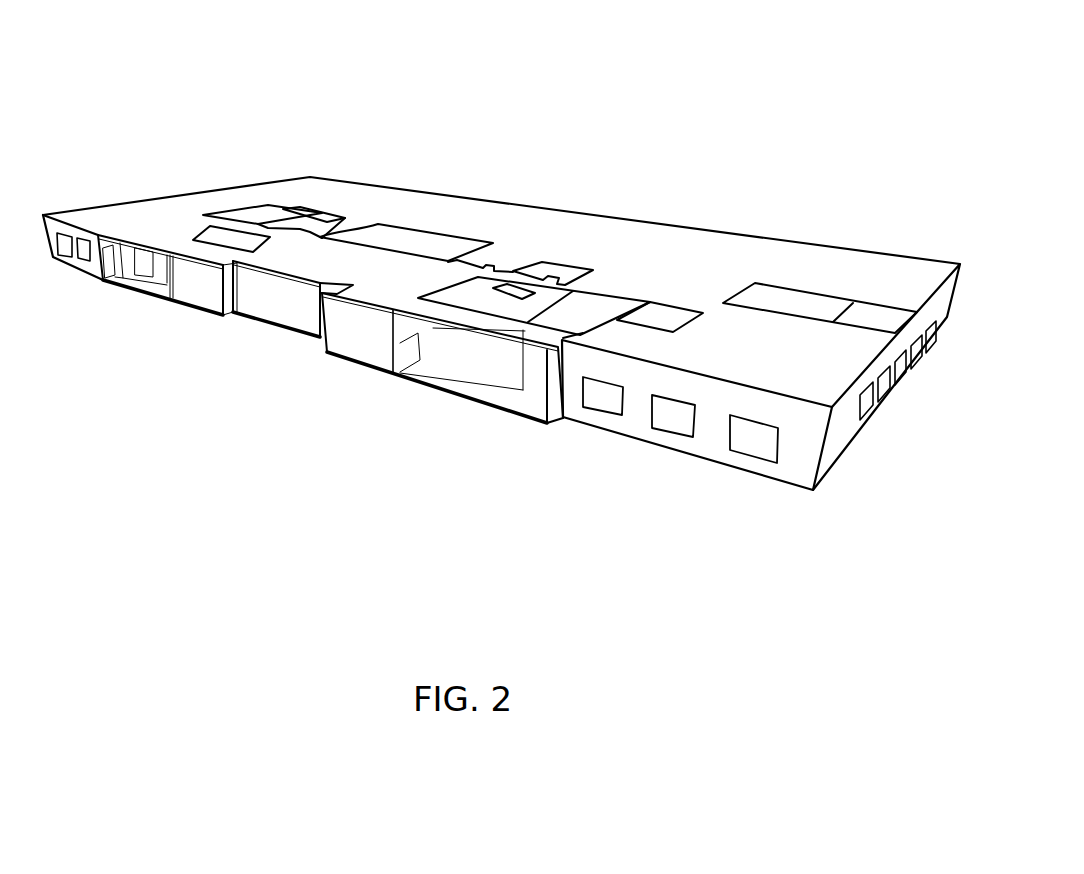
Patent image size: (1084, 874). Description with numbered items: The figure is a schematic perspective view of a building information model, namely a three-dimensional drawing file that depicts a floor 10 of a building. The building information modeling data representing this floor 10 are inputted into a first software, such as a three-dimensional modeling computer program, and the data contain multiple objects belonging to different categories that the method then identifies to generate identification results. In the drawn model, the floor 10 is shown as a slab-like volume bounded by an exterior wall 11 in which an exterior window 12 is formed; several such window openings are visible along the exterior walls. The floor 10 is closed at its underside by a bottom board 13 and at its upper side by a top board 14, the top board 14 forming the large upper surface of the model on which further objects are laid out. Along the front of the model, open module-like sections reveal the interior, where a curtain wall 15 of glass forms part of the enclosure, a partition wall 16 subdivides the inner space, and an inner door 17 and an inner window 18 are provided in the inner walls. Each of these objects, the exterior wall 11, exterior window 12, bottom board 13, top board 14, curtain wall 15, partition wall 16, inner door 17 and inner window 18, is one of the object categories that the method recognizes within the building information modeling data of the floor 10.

The floor 10 is at (279, 150).
The exterior wall 11 is at (633, 418).
The exterior window 12 is at (750, 442).
The bottom board 13 is at (517, 413).
The top board 14 is at (713, 253).
The curtain wall 15 is at (490, 387).
The partition wall 16 is at (457, 347).
The inner door 17 is at (393, 373).
The inner window 18 is at (313, 303).